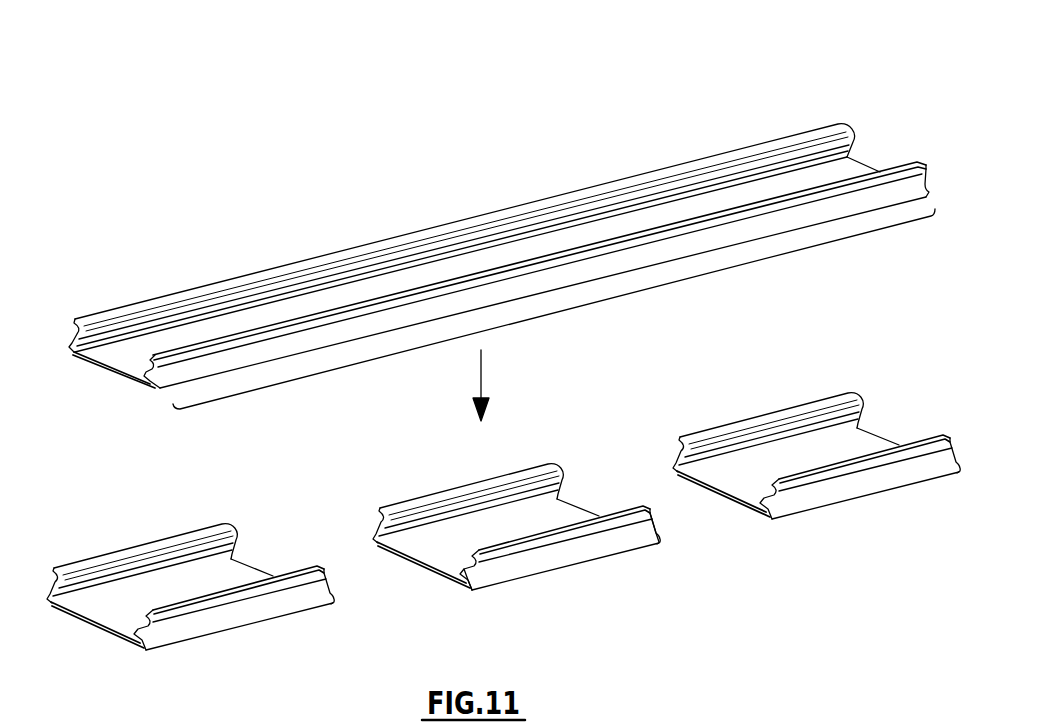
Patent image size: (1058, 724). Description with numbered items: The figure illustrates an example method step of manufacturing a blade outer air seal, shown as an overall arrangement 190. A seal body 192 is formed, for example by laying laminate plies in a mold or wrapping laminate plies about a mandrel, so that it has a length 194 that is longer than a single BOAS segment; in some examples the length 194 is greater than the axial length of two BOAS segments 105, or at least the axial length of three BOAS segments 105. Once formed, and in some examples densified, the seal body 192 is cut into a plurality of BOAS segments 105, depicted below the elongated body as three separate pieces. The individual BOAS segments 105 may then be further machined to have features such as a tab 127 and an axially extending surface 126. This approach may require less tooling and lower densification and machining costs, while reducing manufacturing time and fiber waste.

The elongated rail 190 is at (502, 226).
The seal body 192 is at (375, 253).
The length 194 is at (548, 316).
The BOAS segment 105 is at (207, 627).
The axially extending surface 126 is at (662, 534).
The tab 127 is at (472, 587).